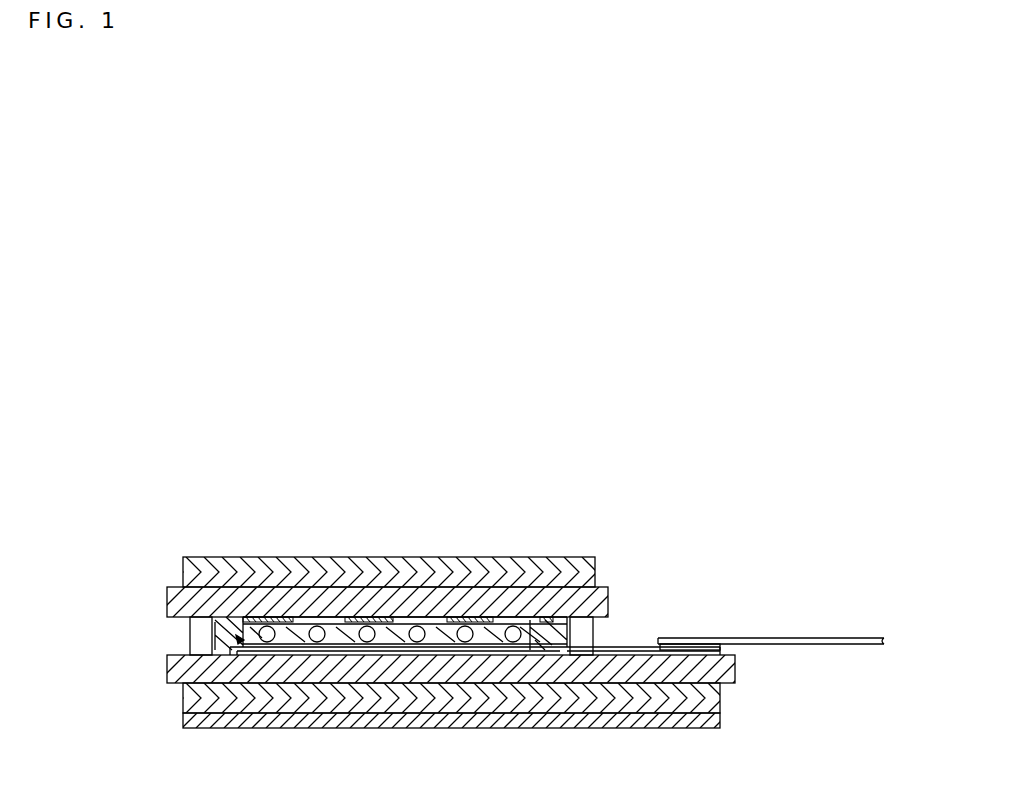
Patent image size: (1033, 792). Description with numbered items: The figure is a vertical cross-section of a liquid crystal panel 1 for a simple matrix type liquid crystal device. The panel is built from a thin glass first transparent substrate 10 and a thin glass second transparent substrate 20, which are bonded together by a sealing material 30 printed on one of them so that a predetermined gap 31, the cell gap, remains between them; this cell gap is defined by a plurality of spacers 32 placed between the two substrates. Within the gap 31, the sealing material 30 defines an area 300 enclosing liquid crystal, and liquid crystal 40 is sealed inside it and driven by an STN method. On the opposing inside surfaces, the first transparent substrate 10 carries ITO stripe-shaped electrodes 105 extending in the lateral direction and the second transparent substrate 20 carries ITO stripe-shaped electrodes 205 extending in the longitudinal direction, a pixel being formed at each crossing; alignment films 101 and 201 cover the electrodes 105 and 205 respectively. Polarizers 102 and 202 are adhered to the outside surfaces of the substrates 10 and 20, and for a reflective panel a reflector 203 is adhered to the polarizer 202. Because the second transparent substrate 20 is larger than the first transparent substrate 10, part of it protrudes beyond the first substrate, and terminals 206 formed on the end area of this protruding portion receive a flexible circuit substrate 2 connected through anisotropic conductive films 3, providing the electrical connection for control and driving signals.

The liquid crystal panel 1 is at (138, 558).
The flexible circuit substrate 2 is at (838, 646).
The anisotropic conductive film 3 is at (690, 652).
The first transparent substrate 10 is at (480, 598).
The second transparent substrate 20 is at (722, 690).
The sealing material 30 is at (602, 587).
The gap 31 is at (243, 620).
The area enclosing liquid crystal 300 is at (391, 633).
The spacers 32 is at (520, 642).
The liquid crystal 40 is at (243, 640).
The alignment film 101 is at (308, 612).
The polarizer 102 is at (427, 557).
The stripe-shaped electrodes 105 is at (522, 615).
The alignment film 201 is at (323, 640).
The polarizer 202 is at (420, 690).
The reflector 203 is at (665, 728).
The stripe-shaped electrodes 205 is at (327, 652).
The terminals 206 is at (672, 662).